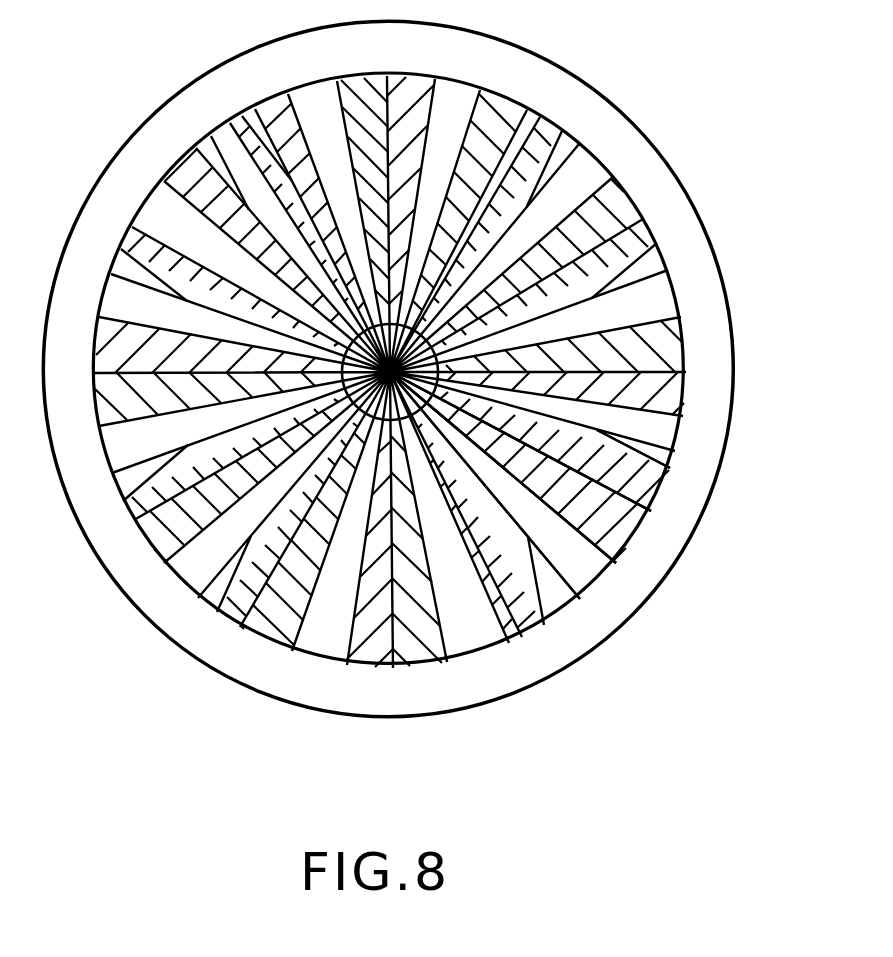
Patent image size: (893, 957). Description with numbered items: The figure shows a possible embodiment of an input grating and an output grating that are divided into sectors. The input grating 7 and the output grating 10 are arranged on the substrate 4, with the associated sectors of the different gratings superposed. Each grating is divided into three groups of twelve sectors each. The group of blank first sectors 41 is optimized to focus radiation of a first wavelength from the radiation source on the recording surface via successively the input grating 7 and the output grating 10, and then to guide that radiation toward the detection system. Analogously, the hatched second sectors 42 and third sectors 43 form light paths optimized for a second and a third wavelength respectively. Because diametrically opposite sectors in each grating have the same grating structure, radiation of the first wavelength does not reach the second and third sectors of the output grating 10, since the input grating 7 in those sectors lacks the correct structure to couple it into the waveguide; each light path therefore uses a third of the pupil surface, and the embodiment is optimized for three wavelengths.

The substrate 4 is at (665, 152).
The output grating 10 is at (675, 262).
The input grating 7 is at (670, 447).
The first sectors 41 is at (588, 567).
The second sectors 42 is at (623, 530).
The third sectors 43 is at (647, 495).